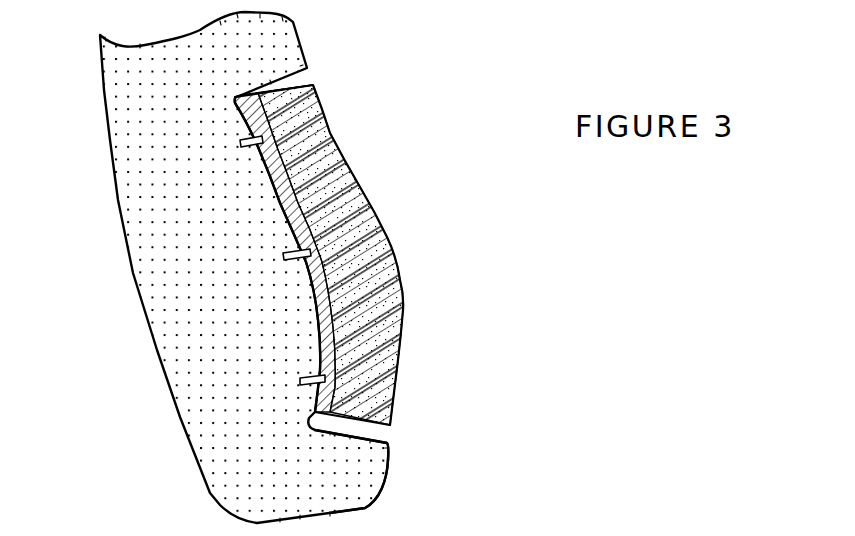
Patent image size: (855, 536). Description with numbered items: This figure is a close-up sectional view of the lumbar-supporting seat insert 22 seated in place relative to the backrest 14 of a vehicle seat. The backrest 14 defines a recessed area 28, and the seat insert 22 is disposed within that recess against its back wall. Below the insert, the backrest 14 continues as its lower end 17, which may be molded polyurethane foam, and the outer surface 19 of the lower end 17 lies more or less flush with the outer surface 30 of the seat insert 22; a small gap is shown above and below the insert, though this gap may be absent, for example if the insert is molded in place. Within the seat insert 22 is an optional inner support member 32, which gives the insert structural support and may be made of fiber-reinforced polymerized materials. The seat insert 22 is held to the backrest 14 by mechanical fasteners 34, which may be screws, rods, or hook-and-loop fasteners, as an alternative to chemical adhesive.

The backrest 14 is at (128, 352).
The lower end 17 is at (358, 485).
The outer surface 19 is at (388, 463).
The seat insert 22 is at (388, 315).
The recessed area 28 is at (270, 85).
The outer surface 30 is at (355, 158).
The inner support member 32 is at (323, 270).
The fasteners 34 is at (240, 144).